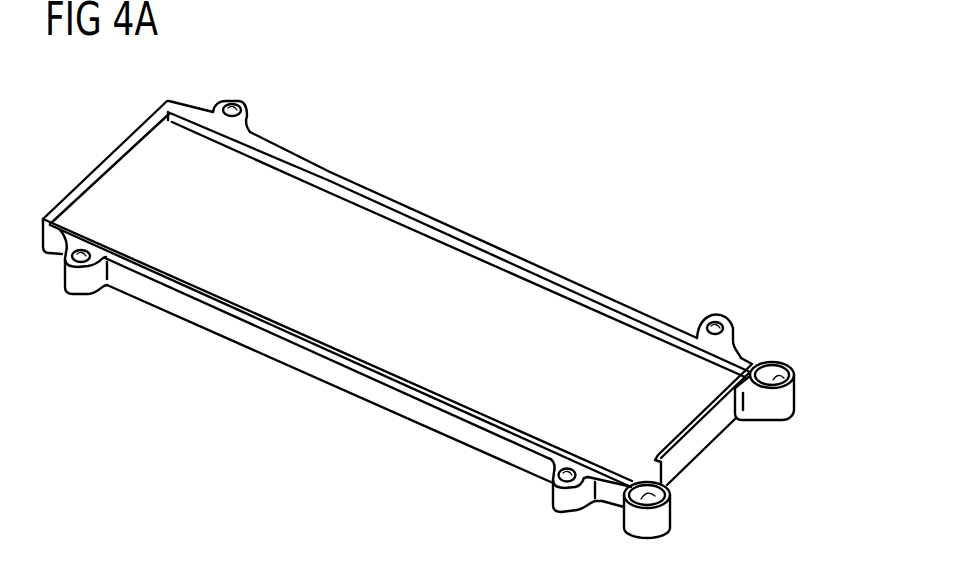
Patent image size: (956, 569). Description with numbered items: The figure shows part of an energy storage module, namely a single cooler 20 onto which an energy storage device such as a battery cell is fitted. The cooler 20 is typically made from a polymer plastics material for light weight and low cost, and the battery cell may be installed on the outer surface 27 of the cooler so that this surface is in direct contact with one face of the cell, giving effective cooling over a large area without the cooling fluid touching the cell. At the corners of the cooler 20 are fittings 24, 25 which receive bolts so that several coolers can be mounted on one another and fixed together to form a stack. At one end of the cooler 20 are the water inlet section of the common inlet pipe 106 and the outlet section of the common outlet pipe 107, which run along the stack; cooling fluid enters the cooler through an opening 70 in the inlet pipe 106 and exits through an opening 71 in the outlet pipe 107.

The cooler 20 is at (292, 361).
The fitting 24 is at (233, 106).
The fitting 25 is at (718, 323).
The outer surface 27 is at (428, 253).
The opening 70 is at (636, 472).
The opening 71 is at (772, 358).
The common inlet pipe 106 is at (668, 517).
The common outlet pipe 107 is at (797, 397).